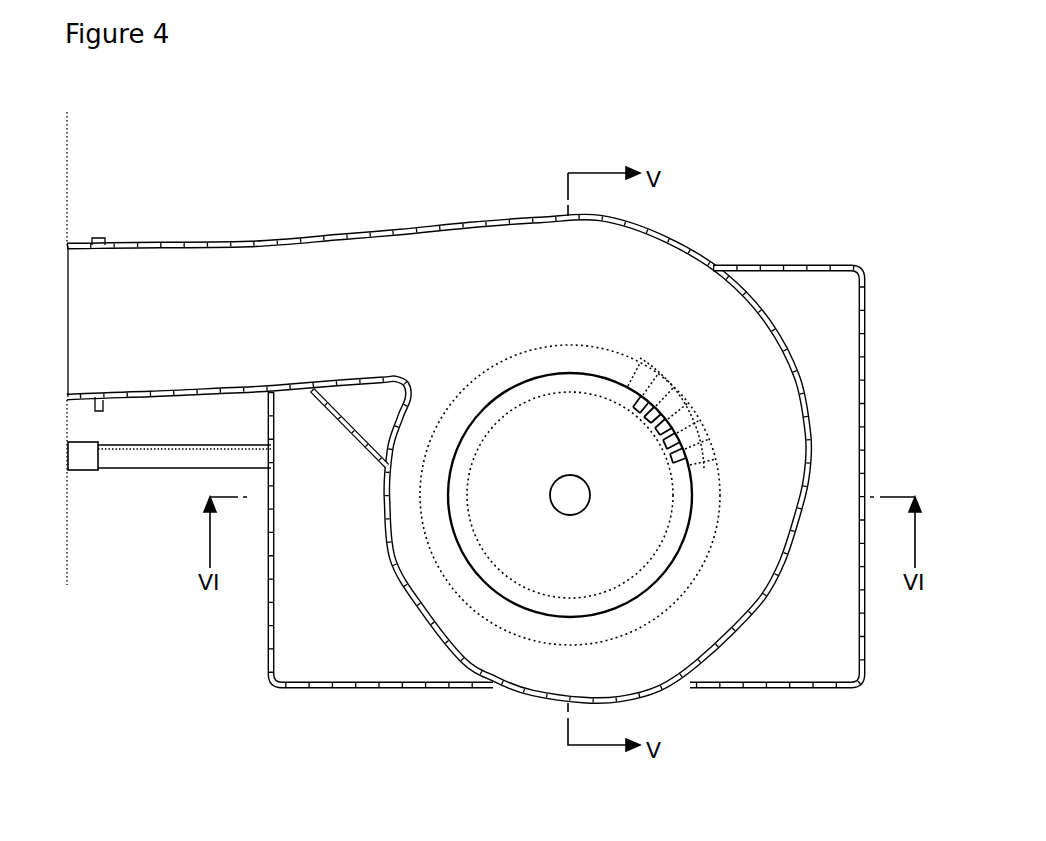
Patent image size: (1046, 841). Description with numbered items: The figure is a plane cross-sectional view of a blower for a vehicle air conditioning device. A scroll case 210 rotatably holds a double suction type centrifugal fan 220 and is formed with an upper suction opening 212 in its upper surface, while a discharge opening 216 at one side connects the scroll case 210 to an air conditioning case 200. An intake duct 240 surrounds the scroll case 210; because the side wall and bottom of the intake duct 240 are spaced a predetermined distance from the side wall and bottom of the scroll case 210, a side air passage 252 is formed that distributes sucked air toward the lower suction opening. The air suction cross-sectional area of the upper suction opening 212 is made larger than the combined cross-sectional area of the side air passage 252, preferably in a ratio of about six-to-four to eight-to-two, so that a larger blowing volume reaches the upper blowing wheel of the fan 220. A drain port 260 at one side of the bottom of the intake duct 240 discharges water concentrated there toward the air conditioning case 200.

The air conditioning case 200 is at (67, 138).
The scroll case 210 is at (690, 243).
The upper suction opening 212 is at (545, 603).
The discharge opening 216 is at (149, 269).
The double suction type centrifugal fan 220 is at (623, 382).
The intake duct 240 is at (838, 262).
The side air passage 252 is at (323, 652).
The drain port 260 is at (145, 459).